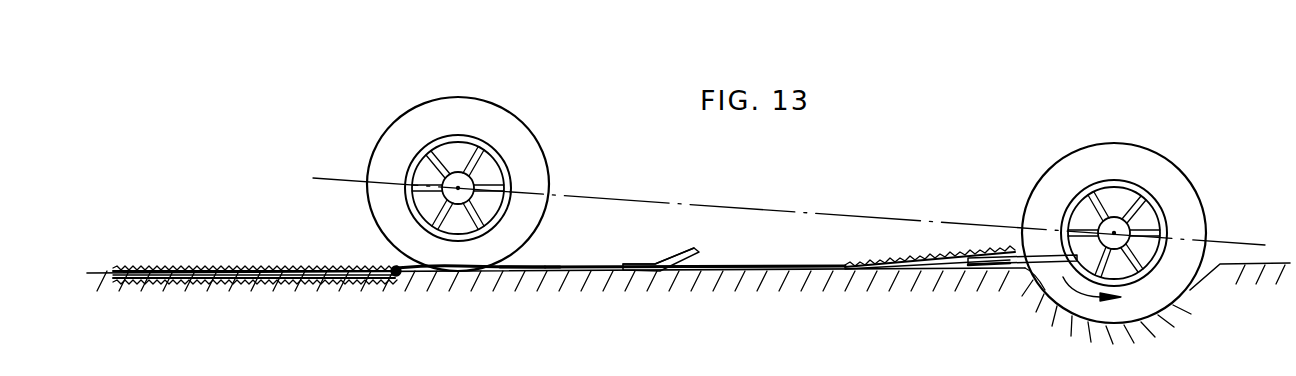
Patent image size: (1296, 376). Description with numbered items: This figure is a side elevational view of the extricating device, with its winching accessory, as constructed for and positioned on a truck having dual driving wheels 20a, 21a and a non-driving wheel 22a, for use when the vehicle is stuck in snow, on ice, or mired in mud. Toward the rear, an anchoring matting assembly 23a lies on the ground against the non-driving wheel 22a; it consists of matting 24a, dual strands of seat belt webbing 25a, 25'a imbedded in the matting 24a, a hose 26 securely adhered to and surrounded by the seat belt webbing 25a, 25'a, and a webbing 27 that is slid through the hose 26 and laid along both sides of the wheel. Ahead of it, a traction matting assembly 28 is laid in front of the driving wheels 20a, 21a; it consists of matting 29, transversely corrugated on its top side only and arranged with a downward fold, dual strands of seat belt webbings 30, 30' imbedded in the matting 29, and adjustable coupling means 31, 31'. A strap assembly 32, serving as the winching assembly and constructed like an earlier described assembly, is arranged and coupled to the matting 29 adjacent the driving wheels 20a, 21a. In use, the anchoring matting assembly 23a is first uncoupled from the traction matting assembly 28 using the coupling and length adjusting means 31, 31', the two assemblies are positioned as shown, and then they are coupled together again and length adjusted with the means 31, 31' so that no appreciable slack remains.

The dual driving wheel 20a is at (1193, 183).
The dual driving wheel 21a is at (1213, 160).
The non-driving wheel 22a is at (527, 122).
The anchoring matting assembly 23a is at (473, 282).
The matting 24a is at (213, 267).
The seat belt webbing 25a is at (282, 283).
The seat belt webbing 25'a is at (254, 288).
The hose 26 is at (392, 277).
The webbing 27 is at (513, 267).
The traction matting assembly 28 is at (855, 273).
The matting 29 is at (892, 250).
The seat belt webbing 30 is at (695, 246).
The seat belt webbing 30' is at (772, 253).
The adjustable coupling means 31 is at (665, 246).
The adjustable coupling means 31' is at (658, 250).
The strap assembly 32 is at (1040, 300).